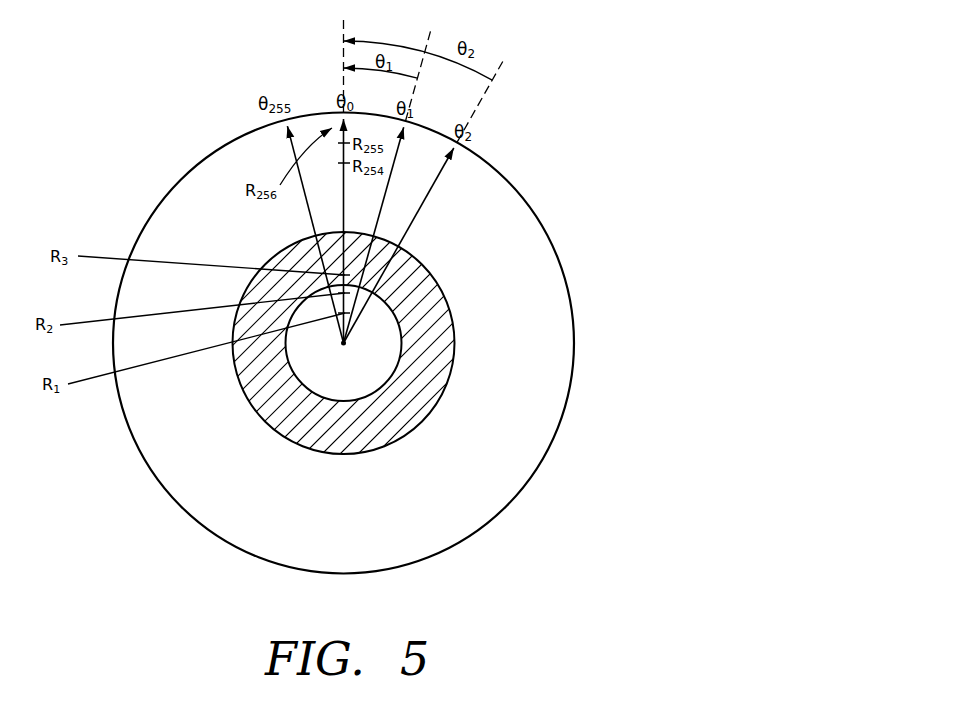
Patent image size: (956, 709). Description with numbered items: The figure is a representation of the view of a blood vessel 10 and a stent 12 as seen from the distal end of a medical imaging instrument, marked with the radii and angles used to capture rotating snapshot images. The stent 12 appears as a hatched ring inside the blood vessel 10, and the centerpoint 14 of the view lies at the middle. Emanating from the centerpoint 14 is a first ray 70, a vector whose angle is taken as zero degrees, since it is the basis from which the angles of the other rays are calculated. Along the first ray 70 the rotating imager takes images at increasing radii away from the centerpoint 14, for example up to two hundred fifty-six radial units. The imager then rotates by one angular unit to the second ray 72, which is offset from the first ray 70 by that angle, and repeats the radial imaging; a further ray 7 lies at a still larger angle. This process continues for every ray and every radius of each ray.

The angular sector boundary line 7 is at (445, 184).
The blood vessel 10 is at (383, 336).
The stent 12 is at (417, 402).
The centerpoint 14 is at (358, 381).
The first ray 70 is at (337, 202).
The second ray 72 is at (397, 197).